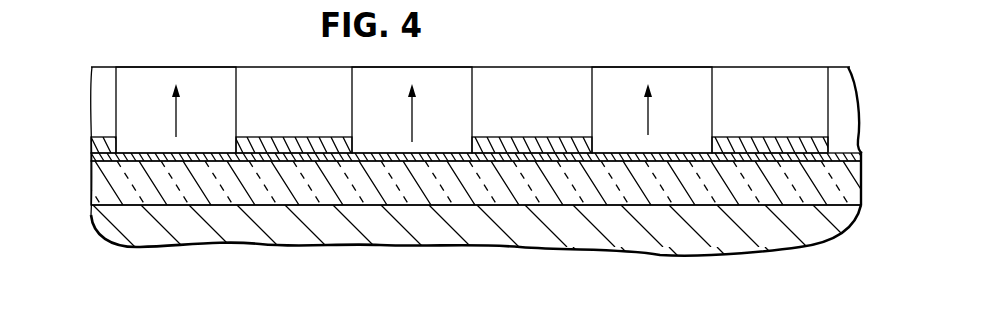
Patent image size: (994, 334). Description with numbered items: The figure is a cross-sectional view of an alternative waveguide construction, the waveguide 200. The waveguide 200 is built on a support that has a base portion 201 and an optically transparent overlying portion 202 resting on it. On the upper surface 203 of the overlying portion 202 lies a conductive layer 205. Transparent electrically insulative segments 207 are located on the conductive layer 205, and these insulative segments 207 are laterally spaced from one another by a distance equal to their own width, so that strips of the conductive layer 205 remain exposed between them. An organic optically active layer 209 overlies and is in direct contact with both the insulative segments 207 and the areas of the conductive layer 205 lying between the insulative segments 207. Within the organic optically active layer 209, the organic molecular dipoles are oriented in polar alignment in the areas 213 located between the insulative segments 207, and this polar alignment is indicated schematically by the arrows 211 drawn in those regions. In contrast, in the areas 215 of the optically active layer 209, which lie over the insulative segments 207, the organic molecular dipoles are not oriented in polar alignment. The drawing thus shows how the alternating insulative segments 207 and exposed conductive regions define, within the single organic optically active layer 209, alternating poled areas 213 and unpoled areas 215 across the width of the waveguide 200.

The waveguide 200 is at (628, 42).
The base portion 201 is at (797, 232).
The optically transparent overlying portion 202 is at (91, 197).
The upper surface 203 is at (862, 150).
The conductive layer 205 is at (91, 160).
The transparent electrically insulative segments 207 is at (525, 137).
The organic optically active layer 209 is at (841, 78).
The arrows 211 is at (650, 120).
The areas of polar alignment 213 is at (703, 91).
The areas of non-polar alignment 215 is at (267, 78).